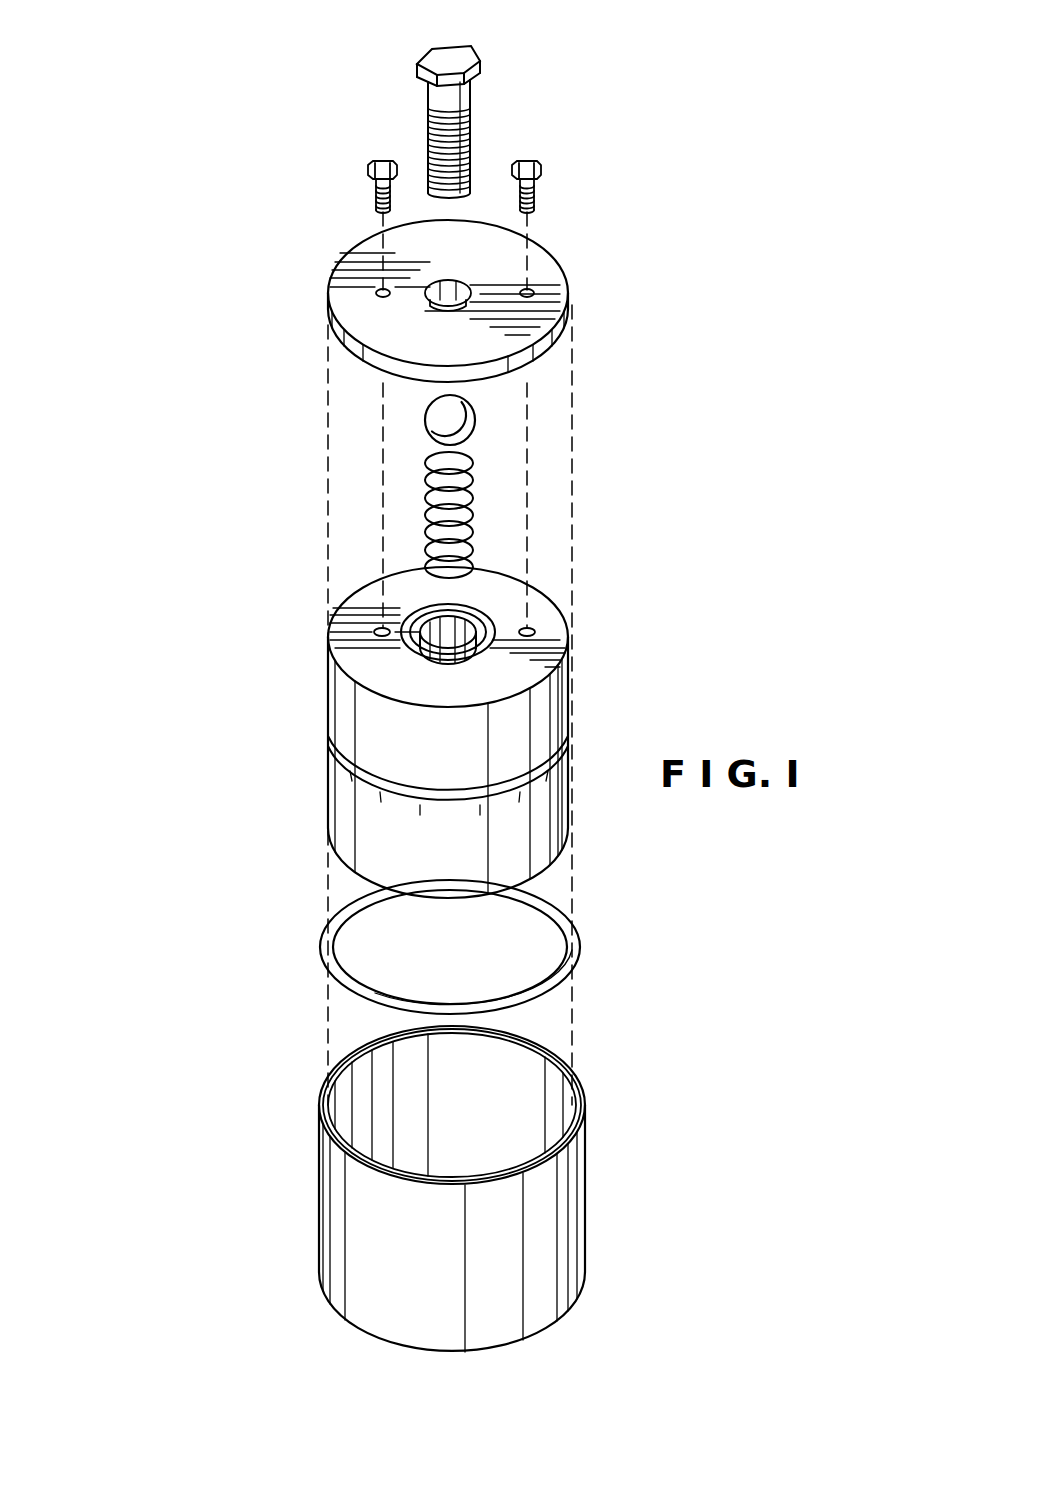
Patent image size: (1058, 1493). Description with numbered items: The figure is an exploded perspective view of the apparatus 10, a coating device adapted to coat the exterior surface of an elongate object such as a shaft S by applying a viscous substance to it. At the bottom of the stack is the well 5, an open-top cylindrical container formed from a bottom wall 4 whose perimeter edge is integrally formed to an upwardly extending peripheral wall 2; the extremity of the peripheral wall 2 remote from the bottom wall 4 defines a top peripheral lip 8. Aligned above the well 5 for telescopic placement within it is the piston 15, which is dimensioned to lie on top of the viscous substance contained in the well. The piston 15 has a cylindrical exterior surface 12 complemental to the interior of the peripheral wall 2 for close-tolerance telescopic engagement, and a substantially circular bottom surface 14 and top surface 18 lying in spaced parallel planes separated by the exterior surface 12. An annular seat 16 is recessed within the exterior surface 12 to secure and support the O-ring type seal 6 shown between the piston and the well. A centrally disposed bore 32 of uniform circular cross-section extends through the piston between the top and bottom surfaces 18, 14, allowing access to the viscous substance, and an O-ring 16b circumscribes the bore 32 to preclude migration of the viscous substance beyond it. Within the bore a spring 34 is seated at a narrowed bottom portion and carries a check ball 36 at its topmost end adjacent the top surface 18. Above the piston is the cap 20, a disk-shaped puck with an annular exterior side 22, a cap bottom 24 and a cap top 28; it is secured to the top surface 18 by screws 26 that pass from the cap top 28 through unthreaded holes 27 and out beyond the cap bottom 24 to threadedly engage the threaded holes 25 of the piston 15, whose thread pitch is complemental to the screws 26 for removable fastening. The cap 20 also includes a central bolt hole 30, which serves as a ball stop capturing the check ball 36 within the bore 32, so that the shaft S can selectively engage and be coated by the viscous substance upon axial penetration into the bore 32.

The shaft S is at (452, 57).
The screws 26 is at (378, 163).
The unthreaded holes 27 is at (383, 290).
The central bolt hole 30 is at (455, 287).
The cap 20 is at (446, 323).
The cap top 28 is at (500, 346).
The annular exterior side 22 is at (350, 350).
The cap bottom 24 is at (372, 370).
The check ball 36 is at (474, 414).
The apparatus 10 is at (662, 456).
The spring 34 is at (473, 478).
The bore 32 is at (455, 628).
The O-ring 16b is at (420, 607).
The threaded holes 25 is at (373, 633).
The top surface 18 is at (386, 676).
The piston 15 is at (473, 734).
The exterior surface 12 is at (370, 728).
The seat 16 is at (387, 782).
The bottom surface 14 is at (370, 893).
The O-ring type seal 6 is at (578, 940).
The top peripheral lip 8 is at (538, 1057).
The peripheral wall 2 is at (343, 1122).
The well 5 is at (469, 1202).
The bottom wall 4 is at (372, 1335).